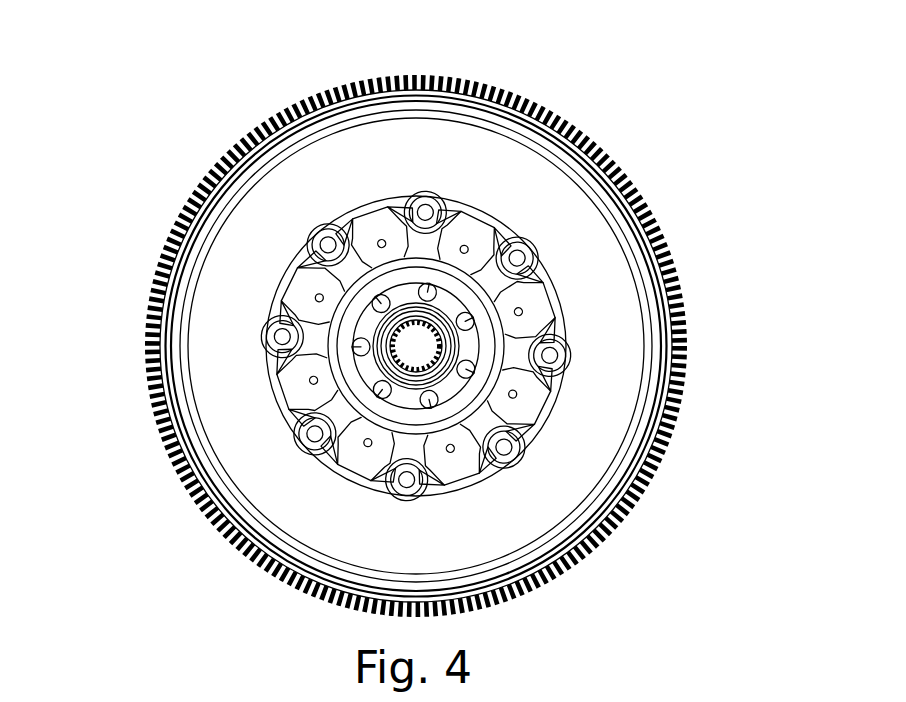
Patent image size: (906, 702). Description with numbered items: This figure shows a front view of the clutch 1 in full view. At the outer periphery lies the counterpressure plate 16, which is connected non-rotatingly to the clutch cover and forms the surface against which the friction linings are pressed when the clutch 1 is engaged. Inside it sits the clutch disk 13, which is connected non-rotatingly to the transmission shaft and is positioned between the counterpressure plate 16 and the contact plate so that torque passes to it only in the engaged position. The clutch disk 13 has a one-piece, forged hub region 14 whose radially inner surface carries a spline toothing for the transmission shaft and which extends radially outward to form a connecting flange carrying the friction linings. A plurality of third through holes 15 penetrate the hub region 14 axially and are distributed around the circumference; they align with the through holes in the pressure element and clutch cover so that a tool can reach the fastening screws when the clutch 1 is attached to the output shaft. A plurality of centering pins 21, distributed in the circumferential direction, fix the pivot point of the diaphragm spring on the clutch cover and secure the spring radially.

The clutch 1 is at (704, 192).
The clutch disk 13 is at (533, 312).
The hub region 14 is at (307, 452).
The third through holes 15 is at (382, 300).
The counterpressure plate 16 is at (203, 393).
The centering pins 21 is at (426, 203).